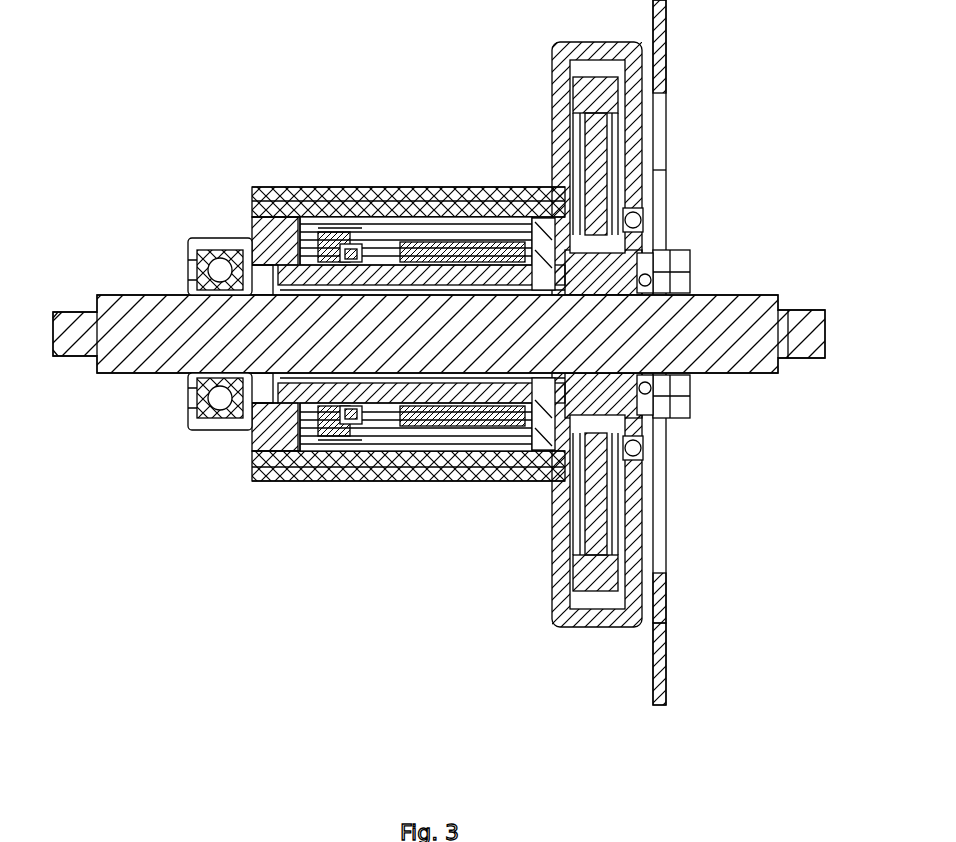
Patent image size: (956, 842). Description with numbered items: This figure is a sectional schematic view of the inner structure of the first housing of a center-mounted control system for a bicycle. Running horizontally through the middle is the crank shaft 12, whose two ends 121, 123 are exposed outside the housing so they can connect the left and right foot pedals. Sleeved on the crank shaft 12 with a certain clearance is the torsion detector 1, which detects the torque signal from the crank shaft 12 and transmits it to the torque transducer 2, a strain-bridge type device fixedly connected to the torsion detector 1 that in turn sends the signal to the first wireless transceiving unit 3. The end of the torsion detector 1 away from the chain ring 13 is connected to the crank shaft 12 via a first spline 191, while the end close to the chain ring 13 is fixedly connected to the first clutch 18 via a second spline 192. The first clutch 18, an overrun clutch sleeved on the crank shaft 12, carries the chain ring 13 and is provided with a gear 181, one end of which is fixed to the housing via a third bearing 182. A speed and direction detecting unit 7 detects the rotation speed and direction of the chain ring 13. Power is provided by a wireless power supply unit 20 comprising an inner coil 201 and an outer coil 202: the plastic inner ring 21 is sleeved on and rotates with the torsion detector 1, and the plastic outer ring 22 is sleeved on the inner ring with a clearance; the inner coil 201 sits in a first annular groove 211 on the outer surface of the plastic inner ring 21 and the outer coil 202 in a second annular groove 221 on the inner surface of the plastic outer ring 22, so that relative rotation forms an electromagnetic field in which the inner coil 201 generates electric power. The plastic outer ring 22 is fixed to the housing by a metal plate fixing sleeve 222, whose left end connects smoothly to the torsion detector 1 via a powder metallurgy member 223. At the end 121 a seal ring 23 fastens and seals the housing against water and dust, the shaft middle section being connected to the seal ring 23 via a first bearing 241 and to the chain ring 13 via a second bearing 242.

The torsion detector 1 is at (365, 198).
The torque transducer 2 is at (413, 195).
The first wireless transceiving unit 3 is at (443, 195).
The speed and direction detecting unit 7 is at (268, 190).
The crank shaft 12 is at (118, 294).
The end of the crank shaft 121 is at (143, 373).
The end of the crank shaft 123 is at (735, 300).
The chain ring 13 is at (664, 140).
The first clutch 18 is at (556, 200).
The gear 181 is at (572, 90).
The third bearing 182 is at (641, 218).
The first spline 191 is at (190, 398).
The second spline 192 is at (528, 215).
The wireless power supply unit 20 is at (392, 531).
The inner coil 201 is at (345, 445).
The outer coil 202 is at (352, 445).
The plastic inner ring 21 is at (498, 200).
The first annular groove 211 is at (330, 208).
The plastic outer ring 22 is at (432, 443).
The second annular groove 221 is at (252, 455).
The metal plate fixing sleeve 222 is at (402, 450).
The powder metallurgy member 223 is at (200, 430).
The seal ring 23 is at (188, 282).
The first bearing 241 is at (196, 240).
The second bearing 242 is at (675, 273).